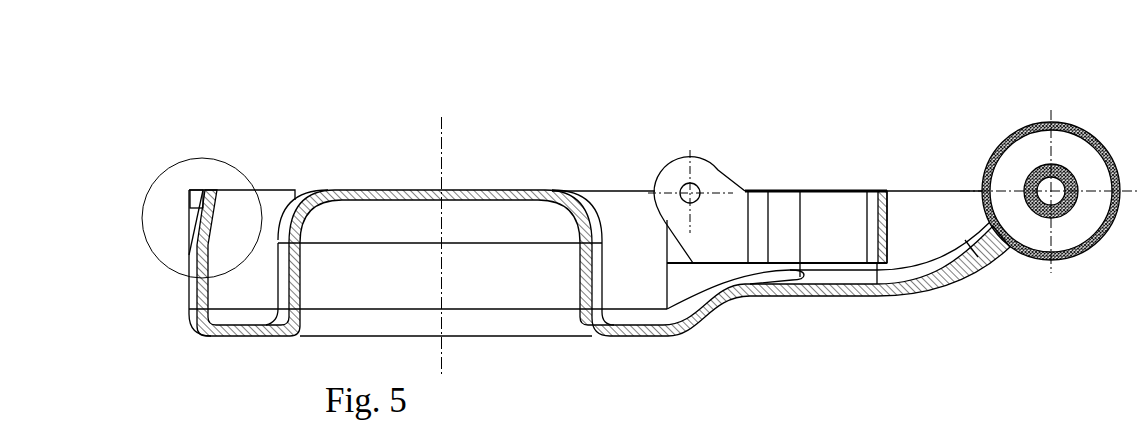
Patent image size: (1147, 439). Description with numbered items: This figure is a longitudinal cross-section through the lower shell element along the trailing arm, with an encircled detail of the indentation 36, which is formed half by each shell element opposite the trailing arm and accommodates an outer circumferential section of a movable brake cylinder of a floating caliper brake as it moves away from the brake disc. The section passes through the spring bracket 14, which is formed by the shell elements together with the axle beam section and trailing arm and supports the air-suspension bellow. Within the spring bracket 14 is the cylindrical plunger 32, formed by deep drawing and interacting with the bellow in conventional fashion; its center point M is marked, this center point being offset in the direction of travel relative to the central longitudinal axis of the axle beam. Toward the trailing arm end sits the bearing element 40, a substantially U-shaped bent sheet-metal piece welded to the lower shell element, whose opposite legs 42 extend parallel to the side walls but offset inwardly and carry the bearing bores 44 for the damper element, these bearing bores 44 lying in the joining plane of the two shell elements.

The spring bracket 14 is at (362, 158).
The cylindrical plunger 32 is at (460, 188).
The indentation 36 is at (190, 195).
The bearing element 40 is at (812, 197).
The legs 42 is at (760, 212).
The bearing bores 44 is at (693, 182).
The center point of plunger M is at (442, 243).